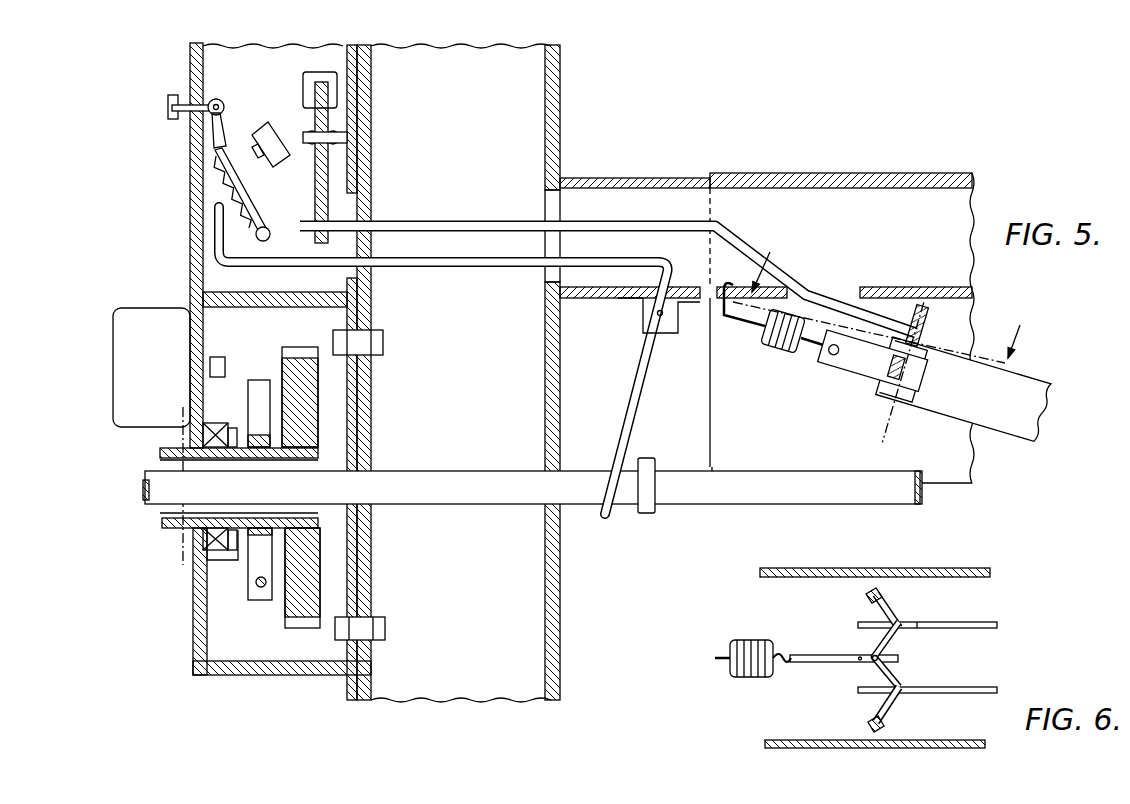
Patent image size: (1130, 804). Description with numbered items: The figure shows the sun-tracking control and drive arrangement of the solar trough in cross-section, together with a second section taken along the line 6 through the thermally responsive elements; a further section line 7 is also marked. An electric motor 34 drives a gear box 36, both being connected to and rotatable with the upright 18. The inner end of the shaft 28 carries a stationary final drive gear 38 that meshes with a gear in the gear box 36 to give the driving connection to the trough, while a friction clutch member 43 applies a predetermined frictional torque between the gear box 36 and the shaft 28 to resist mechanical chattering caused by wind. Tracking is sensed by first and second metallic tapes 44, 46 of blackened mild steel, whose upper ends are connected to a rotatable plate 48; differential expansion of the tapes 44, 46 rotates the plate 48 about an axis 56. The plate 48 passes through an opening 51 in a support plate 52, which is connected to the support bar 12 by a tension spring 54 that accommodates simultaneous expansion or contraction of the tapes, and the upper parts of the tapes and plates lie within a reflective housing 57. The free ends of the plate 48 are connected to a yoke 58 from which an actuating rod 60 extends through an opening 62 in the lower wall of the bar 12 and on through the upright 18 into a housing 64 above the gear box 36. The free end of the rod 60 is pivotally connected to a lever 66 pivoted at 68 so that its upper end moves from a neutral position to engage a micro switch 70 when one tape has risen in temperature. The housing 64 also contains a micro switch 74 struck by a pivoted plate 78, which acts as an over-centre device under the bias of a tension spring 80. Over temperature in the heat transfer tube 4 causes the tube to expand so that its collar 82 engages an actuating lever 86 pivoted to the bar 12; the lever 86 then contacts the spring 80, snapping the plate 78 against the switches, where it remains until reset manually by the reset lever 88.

In FIG. 5, the heat transfer tube 4 is at (790, 494).
In FIG. 5, the section line 6— 6 is at (782, 252).
In FIG. 5, the section line 7- 7 is at (168, 414).
In FIG. 5, the support bar 12 is at (869, 186).
In FIG. 5, the upright 18 is at (557, 685).
In FIG. 5, the shaft 28 is at (172, 540).
In FIG. 5, the electric motor 34 is at (144, 320).
In FIG. 5, the gear box 36 is at (198, 596).
In FIG. 5, the final drive gear 38 is at (305, 598).
In FIG. 5, the friction clutch member 43 is at (258, 562).
In FIG. 6, the first metallic tape 44 is at (954, 696).
In FIG. 6, the second metallic tape 46 is at (960, 622).
In FIG. 6, the rotatable plate 48 is at (898, 682).
In FIG. 6, the opening 51 is at (865, 662).
In FIG. 6, the support plate 52 is at (828, 655).
In FIG. 5, the tension spring 54 is at (776, 346).
In FIG. 6, the tension spring 54 is at (754, 677).
In FIG. 6, the axis 56 is at (895, 655).
In FIG. 5, the reflective housing 57 is at (712, 380).
In FIG. 6, the reflective housing 57 is at (958, 574).
In FIG. 6, the yoke 58 is at (890, 597).
In FIG. 5, the actuating rod 60 is at (800, 293).
In FIG. 5, the opening 62 is at (850, 290).
In FIG. 5, the housing 64 is at (196, 236).
In FIG. 5, the lever 66 is at (330, 178).
In FIG. 5, the pivot 68 is at (346, 137).
In FIG. 5, the micro switch 70 is at (331, 90).
In FIG. 5, the micro switch 74 is at (278, 156).
In FIG. 5, the pivoted plate 78 is at (212, 153).
In FIG. 5, the tension spring 80 is at (222, 184).
In FIG. 5, the collar 82 is at (647, 458).
In FIG. 5, the actuating lever 86 is at (632, 385).
In FIG. 5, the reset lever 88 is at (228, 134).